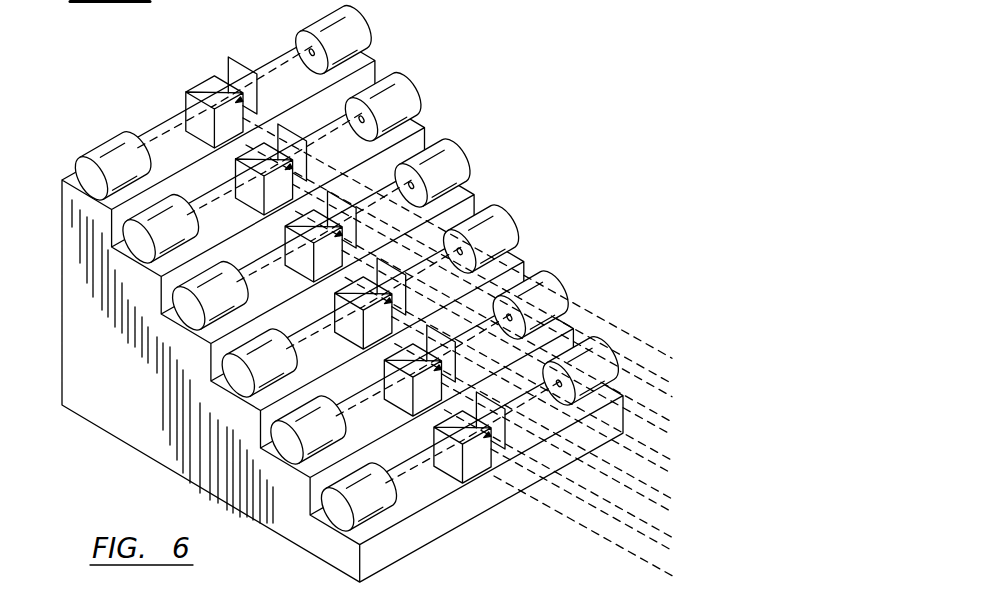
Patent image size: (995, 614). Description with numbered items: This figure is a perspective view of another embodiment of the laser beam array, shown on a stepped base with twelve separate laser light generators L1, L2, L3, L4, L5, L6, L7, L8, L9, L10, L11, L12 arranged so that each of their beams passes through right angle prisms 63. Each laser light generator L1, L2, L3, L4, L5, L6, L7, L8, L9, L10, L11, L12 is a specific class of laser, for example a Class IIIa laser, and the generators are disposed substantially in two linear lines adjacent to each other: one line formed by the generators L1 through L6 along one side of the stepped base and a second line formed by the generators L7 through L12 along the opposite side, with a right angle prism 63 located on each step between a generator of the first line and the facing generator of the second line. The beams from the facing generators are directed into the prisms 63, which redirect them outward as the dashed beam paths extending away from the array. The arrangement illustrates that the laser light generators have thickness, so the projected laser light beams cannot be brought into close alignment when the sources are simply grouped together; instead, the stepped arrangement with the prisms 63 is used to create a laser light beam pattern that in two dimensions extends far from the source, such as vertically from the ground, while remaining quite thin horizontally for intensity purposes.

The laser light generator L1 is at (76, 172).
The laser light generator L2 is at (124, 242).
The laser light generator L3 is at (176, 313).
The laser light generator L4 is at (224, 382).
The laser light generator L5 is at (275, 447).
The laser light generator L6 is at (324, 516).
The laser light generator L7 is at (363, 19).
The laser light generator L8 is at (410, 85).
The laser light generator L9 is at (460, 151).
The laser light generator L10 is at (508, 217).
The laser light generator L11 is at (556, 283).
The laser light generator L12 is at (607, 350).
The right angle prism 63 is at (203, 91).